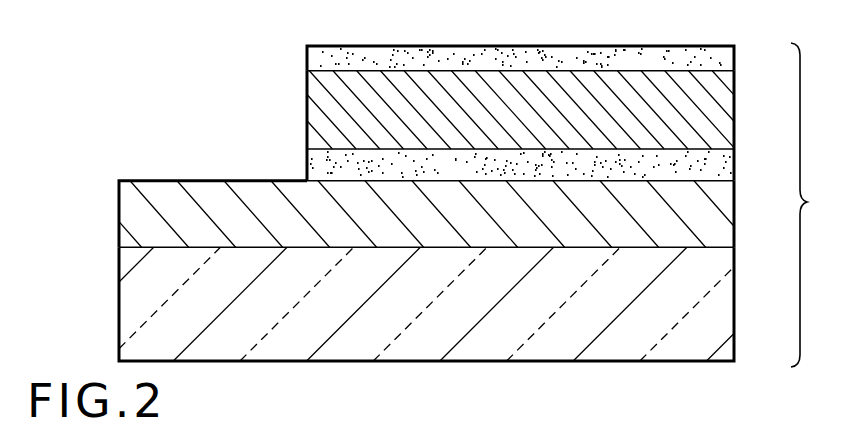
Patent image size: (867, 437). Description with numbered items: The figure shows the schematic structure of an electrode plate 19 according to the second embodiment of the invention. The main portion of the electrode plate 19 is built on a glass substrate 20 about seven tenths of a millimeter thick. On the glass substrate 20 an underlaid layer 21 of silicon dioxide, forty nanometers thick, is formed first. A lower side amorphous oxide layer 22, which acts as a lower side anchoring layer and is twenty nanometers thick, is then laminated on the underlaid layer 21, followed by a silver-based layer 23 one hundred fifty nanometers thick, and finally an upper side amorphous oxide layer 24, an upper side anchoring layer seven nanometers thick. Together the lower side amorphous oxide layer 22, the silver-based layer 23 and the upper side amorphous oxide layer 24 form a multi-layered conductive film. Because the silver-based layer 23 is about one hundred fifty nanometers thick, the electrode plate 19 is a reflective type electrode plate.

The electrode plate 19 is at (813, 205).
The glass substrate 20 is at (723, 323).
The underlaid layer 21 is at (723, 223).
The lower side amorphous oxide layer 22 is at (723, 173).
The silver-based layer 23 is at (723, 116).
The upper side amorphous oxide layer 24 is at (723, 63).